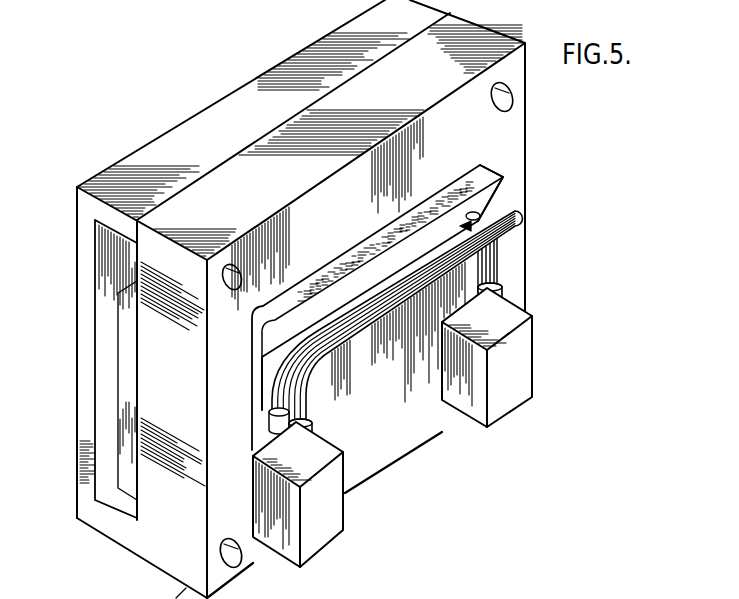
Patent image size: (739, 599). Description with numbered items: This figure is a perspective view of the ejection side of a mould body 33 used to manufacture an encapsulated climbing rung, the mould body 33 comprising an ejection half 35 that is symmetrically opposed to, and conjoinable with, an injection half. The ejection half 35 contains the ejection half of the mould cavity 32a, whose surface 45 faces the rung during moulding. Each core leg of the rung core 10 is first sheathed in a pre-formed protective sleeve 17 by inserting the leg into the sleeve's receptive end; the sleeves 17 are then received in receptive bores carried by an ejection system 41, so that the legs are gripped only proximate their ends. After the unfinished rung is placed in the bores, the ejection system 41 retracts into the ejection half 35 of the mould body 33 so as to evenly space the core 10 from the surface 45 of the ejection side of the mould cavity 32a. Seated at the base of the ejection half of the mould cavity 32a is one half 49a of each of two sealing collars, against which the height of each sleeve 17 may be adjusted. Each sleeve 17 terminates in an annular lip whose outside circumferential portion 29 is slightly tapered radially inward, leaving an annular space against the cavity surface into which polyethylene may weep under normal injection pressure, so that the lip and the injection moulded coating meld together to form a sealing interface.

The core 10 is at (522, 211).
The pre-formed protective sleeve 17 is at (505, 302).
The outside circumferential portion 29 is at (311, 427).
The ejection half of the mould cavity 32a is at (363, 305).
The mould body 33 is at (262, 578).
The ejection half 35 is at (76, 336).
The ejection system 41 is at (337, 522).
The surface of the ejection side of the mould cavity 45 is at (498, 217).
The sealing collar half 49a is at (277, 432).